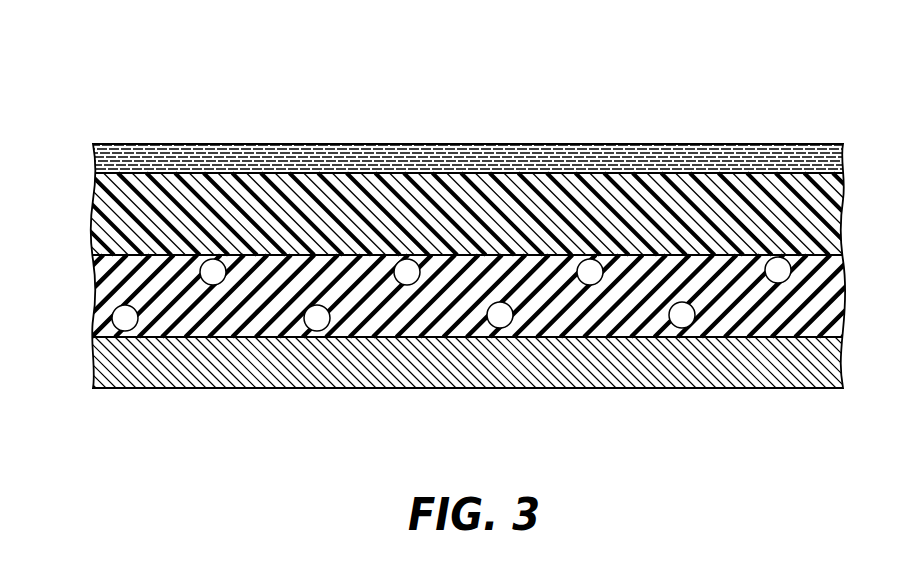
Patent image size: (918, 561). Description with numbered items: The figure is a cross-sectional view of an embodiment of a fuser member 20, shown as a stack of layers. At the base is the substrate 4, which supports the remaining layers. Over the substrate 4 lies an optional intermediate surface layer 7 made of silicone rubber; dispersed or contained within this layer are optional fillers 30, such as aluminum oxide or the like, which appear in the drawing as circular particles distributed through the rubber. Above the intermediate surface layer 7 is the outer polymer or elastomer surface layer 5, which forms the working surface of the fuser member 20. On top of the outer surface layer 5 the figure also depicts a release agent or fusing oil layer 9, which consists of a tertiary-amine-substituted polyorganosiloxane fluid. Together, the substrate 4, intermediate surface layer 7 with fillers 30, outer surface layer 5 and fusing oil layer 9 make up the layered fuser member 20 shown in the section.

The fuser member 20 is at (676, 83).
The fusing oil layer 9 is at (92, 158).
The outer polymer or elastomer surface layer 5 is at (93, 195).
The intermediate surface layer 7 is at (133, 285).
The fillers 30 is at (126, 327).
The substrate 4 is at (845, 363).